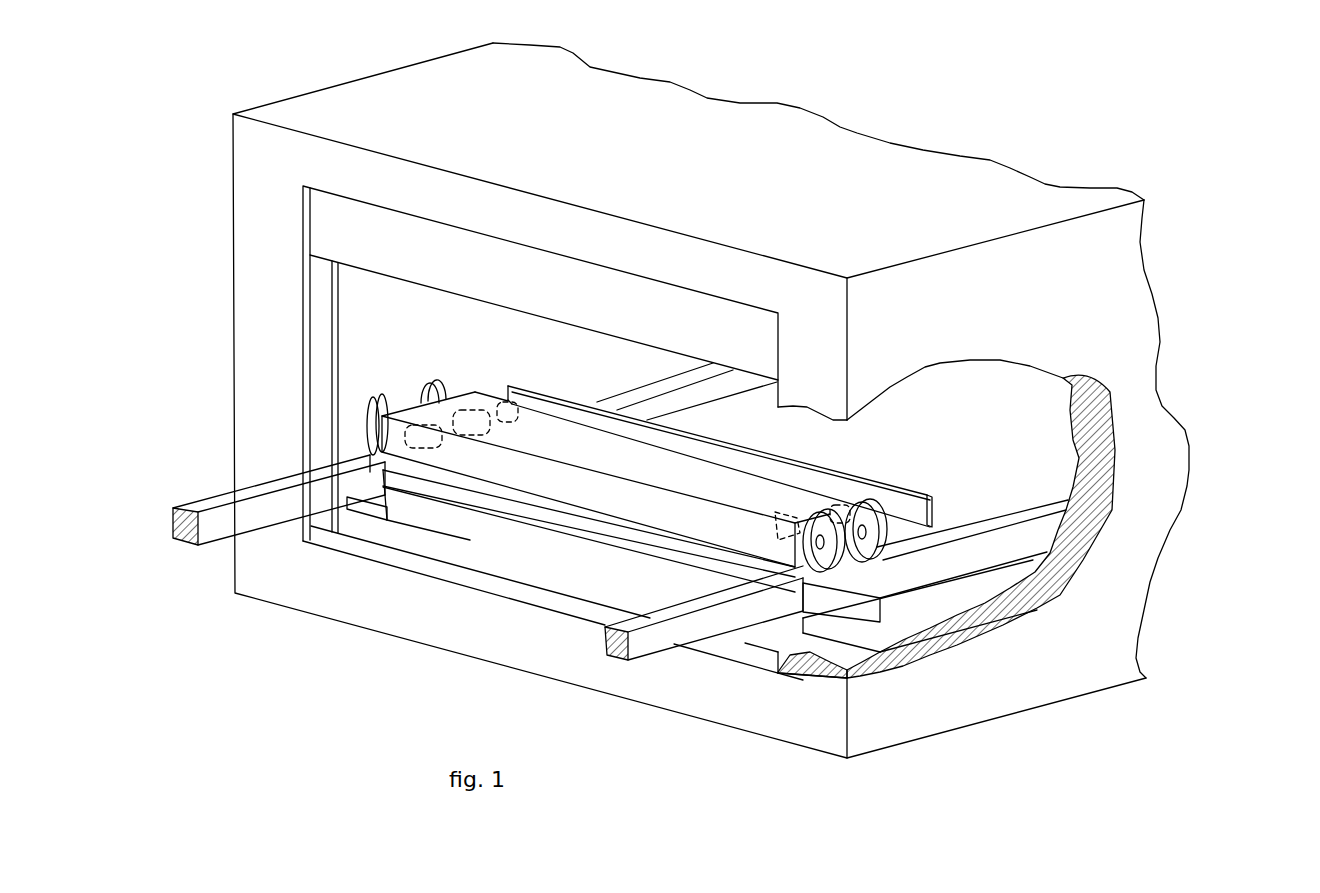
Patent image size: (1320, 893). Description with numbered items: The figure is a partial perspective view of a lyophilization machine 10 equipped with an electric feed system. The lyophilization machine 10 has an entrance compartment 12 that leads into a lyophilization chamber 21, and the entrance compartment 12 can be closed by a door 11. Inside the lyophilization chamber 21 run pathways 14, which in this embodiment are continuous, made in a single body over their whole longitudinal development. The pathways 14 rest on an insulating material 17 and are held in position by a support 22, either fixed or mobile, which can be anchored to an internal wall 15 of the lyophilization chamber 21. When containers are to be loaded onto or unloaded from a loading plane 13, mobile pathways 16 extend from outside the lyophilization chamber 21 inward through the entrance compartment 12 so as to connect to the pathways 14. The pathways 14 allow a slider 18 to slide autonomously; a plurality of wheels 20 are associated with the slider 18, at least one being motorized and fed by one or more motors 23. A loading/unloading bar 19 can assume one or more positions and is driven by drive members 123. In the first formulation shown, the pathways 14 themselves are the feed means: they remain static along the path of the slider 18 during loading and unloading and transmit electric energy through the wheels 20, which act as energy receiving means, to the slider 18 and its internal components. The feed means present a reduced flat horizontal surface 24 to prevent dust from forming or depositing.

The lyophilization machine 10 is at (1228, 209).
The door 11 is at (574, 287).
The entrance compartment 12 is at (328, 347).
The loading plane 13 is at (507, 501).
The pathways 14 is at (702, 394).
The internal wall 15 is at (1080, 453).
The mobile pathways 16 is at (215, 533).
The insulating material 17 is at (848, 608).
The slider 18 is at (598, 445).
The loading/unloading bar 19 is at (906, 497).
The wheels 20 is at (385, 410).
The lyophilization chamber 21 is at (376, 295).
The support 22 is at (903, 628).
The motor 23 is at (417, 433).
The reduced flat horizontal surface 24 is at (655, 387).
The drive members 123 is at (497, 396).